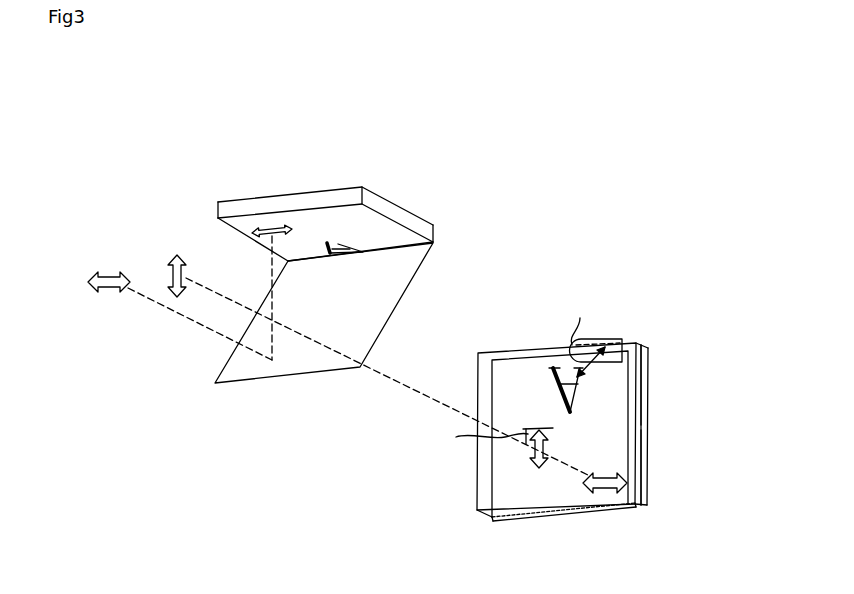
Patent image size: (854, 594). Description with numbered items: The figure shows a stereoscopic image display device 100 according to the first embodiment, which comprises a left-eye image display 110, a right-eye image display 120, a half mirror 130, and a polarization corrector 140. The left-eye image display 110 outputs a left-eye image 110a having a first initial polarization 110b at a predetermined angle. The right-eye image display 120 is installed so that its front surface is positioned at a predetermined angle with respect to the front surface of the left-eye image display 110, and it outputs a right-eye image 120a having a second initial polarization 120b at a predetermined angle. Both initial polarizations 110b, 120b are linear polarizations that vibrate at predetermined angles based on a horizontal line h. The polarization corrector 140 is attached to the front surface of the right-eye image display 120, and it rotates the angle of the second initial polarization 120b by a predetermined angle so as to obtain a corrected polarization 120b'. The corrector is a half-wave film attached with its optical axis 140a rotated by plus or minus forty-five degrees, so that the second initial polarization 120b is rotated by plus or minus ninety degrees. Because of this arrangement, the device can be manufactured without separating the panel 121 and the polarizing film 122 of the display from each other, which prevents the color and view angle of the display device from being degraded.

The stereoscopic image display device 100 is at (90, 99).
The left-eye image display 110 is at (390, 200).
The left-eye image 110a is at (326, 246).
The first initial polarization 110b is at (266, 234).
The right-eye image display 120 is at (712, 428).
The right-eye image 120a is at (582, 400).
The second initial polarization 120b is at (391, 386).
The corrected polarization 120b' is at (529, 493).
The panel 121 is at (646, 432).
The polarizing film 122 is at (645, 488).
The half mirror 130 is at (231, 383).
The polarization corrector 140 is at (477, 496).
The optical axis 140a is at (622, 360).
The horizontal line h is at (610, 340).